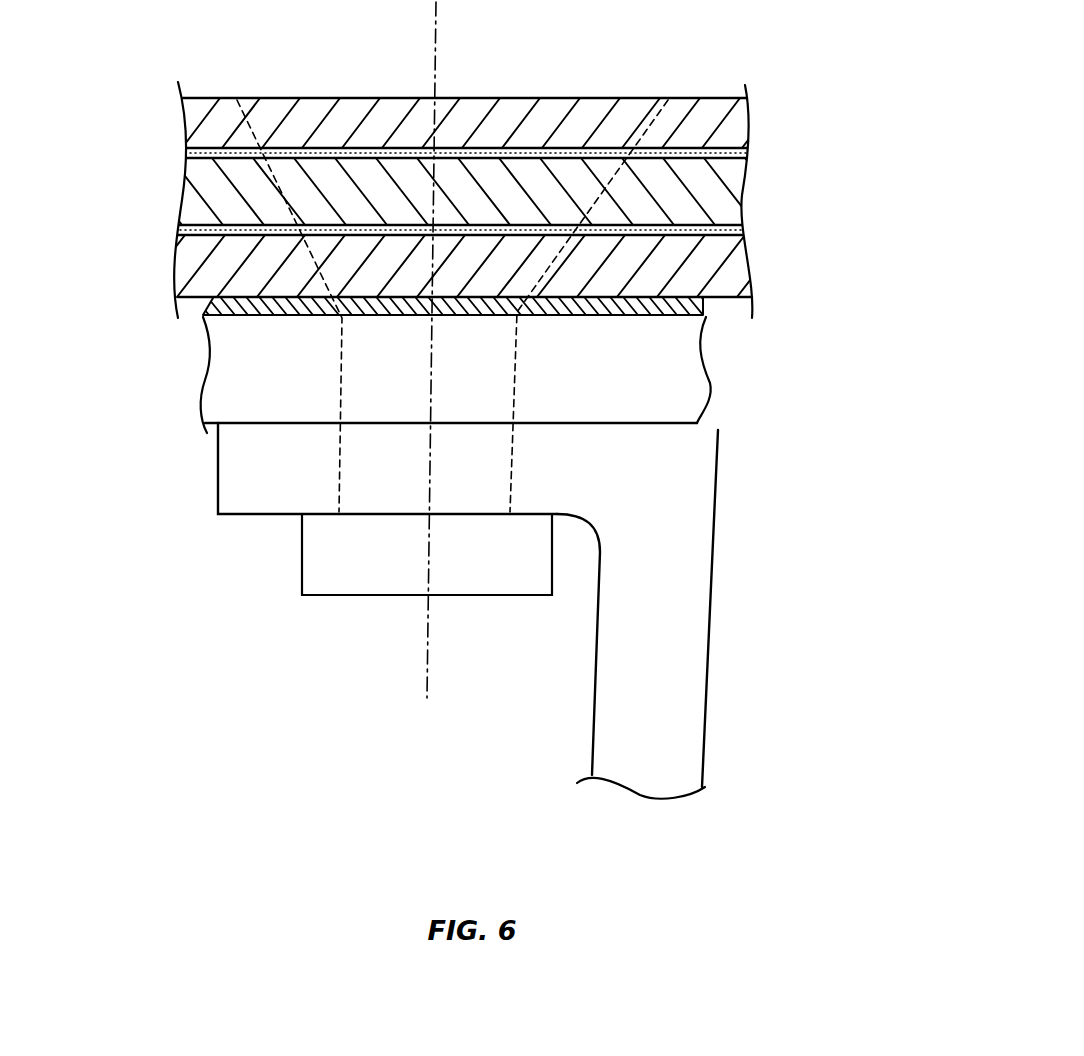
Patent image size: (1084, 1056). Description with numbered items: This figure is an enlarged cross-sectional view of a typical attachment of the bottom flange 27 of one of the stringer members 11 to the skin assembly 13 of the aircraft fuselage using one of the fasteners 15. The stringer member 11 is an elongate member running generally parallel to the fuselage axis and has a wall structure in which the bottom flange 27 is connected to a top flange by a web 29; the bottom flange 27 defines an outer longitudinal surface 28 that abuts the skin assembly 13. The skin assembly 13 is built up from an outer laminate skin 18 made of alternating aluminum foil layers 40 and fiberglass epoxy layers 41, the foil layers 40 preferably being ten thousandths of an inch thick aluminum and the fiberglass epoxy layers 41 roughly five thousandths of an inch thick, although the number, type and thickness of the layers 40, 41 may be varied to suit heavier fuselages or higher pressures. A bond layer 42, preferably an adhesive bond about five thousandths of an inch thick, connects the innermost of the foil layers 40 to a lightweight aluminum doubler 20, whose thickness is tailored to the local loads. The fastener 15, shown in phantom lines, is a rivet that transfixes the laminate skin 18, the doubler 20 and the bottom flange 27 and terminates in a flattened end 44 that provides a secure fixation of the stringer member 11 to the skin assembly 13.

The skin assembly 13 is at (710, 100).
The aluminum foil layers 40 is at (740, 137).
The laminate skin 18 is at (733, 191).
The fiberglass epoxy layers 41 is at (187, 230).
The bond layer 42 is at (203, 315).
The doubler 20 is at (692, 395).
The outer longitudinal surface 28 is at (300, 423).
The bottom flange 27 is at (228, 500).
The flattened end 44 is at (497, 578).
The fastener 15 is at (305, 597).
The stringer member 11 is at (687, 675).
The web 29 is at (613, 763).